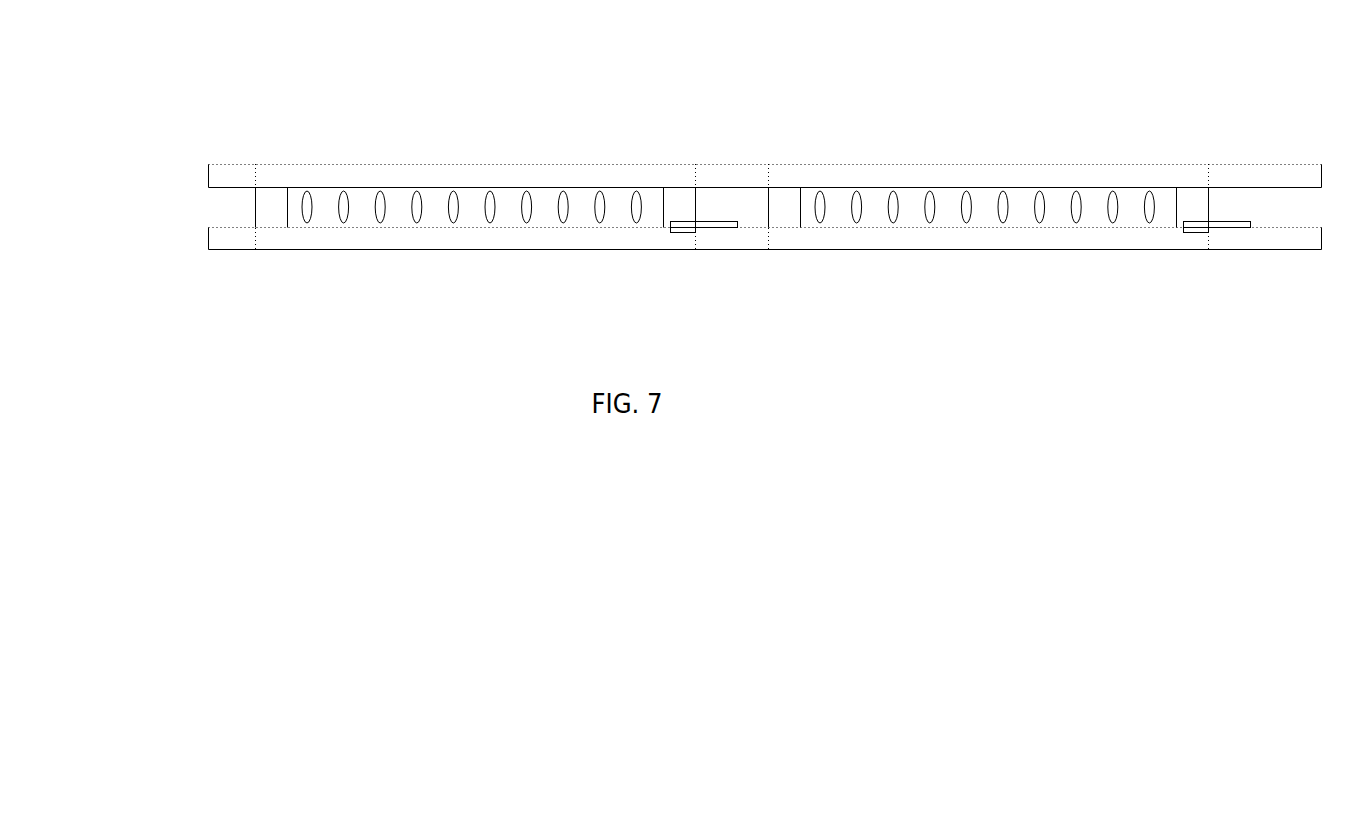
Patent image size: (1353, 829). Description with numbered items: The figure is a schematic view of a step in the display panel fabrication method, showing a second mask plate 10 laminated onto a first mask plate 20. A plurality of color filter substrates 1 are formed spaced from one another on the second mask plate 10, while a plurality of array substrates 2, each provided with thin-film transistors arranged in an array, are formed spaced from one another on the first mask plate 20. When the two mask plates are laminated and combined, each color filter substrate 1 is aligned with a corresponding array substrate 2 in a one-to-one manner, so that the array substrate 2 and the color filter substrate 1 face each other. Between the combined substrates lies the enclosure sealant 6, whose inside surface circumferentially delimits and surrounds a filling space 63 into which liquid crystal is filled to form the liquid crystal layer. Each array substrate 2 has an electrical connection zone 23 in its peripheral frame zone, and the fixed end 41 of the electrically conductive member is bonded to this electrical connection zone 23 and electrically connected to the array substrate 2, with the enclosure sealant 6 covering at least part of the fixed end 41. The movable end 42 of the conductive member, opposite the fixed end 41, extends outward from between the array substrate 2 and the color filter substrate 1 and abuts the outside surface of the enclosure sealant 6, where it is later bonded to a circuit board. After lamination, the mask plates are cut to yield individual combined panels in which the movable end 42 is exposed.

The color filter substrate 1 is at (474, 173).
The array substrate 2 is at (508, 237).
The enclosure sealant 6 is at (272, 198).
The second mask plate 10 is at (716, 134).
The first mask plate 20 is at (713, 252).
The electrical connection zone 23 is at (673, 232).
The fixed end 41 is at (680, 224).
The movable end 42 is at (726, 225).
The filling space 63 is at (395, 197).